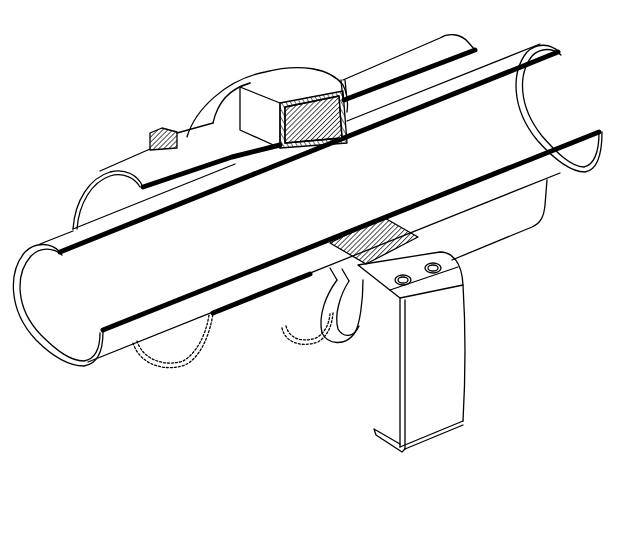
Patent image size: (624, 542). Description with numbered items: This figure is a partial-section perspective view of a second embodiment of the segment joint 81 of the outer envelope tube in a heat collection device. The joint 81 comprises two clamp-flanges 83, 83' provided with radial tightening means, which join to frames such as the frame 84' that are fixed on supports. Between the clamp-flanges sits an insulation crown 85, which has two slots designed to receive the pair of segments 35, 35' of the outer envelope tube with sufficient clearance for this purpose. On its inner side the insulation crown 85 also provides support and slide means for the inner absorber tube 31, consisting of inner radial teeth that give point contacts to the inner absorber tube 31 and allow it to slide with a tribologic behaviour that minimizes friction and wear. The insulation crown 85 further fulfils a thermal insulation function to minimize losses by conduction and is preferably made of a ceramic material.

The joint 81 is at (125, 100).
The inner absorber tube 31 is at (108, 343).
The segment of outer envelope tube 35 is at (151, 187).
The segment of outer envelope tube 35' is at (430, 59).
The clamp-flange 83 is at (249, 89).
The clamp-flange 83' is at (353, 327).
The frame 84' is at (445, 352).
The insulation crown 85 is at (377, 228).